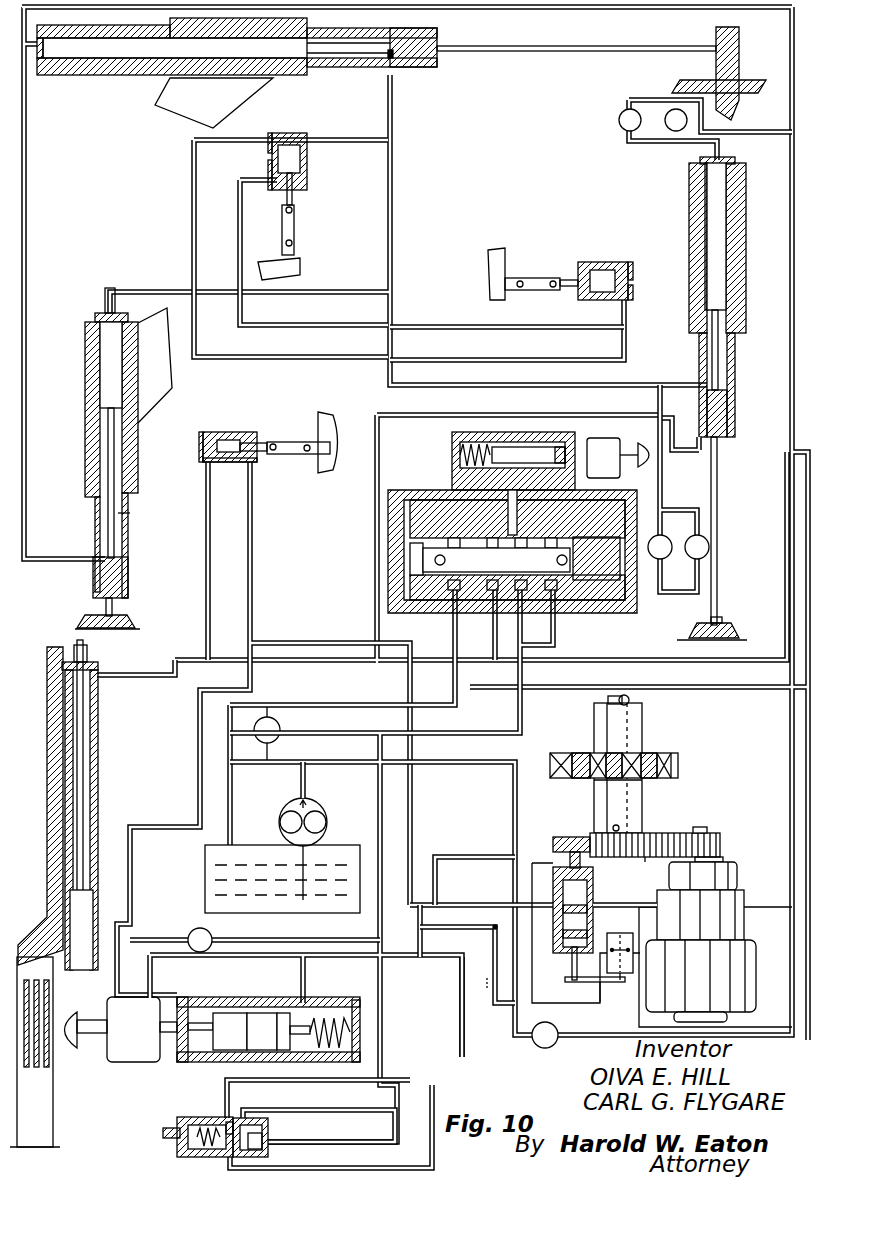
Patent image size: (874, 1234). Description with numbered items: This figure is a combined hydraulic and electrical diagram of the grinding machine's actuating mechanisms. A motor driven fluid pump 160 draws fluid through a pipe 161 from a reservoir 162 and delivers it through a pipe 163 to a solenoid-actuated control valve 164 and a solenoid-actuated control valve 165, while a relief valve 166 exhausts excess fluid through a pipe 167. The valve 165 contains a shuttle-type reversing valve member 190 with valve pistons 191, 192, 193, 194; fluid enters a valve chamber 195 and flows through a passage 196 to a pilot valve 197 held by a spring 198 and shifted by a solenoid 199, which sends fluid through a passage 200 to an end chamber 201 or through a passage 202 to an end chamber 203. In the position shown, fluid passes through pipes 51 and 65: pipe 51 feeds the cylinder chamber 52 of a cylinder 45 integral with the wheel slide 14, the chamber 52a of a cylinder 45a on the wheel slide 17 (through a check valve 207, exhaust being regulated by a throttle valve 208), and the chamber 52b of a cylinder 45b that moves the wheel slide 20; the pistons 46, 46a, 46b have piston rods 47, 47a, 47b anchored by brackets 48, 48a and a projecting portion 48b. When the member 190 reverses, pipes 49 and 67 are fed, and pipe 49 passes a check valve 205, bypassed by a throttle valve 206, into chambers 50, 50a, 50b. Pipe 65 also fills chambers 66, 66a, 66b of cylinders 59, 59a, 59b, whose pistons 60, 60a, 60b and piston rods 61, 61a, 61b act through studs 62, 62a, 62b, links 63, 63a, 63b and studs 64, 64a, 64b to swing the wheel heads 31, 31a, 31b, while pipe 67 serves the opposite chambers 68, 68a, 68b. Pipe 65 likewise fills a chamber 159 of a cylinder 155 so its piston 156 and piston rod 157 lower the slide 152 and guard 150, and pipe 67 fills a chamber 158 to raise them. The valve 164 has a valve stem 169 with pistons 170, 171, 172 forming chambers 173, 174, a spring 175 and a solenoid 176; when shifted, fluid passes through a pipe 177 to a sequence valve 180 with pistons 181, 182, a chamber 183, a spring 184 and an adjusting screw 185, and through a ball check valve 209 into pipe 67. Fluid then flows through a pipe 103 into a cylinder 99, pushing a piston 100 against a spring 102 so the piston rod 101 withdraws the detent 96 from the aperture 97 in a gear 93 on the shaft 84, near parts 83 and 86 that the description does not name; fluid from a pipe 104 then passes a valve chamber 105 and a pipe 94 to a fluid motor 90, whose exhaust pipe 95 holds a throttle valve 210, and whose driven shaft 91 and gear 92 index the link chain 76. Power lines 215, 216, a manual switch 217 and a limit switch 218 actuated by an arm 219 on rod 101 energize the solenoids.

The wheel slide 14 is at (85, 430).
The wheel slide 17 is at (746, 210).
The wheel slide 20 is at (270, 80).
The wheel head 31 is at (330, 414).
The wheel head 31a is at (488, 268).
The wheel head 31b is at (302, 270).
The cylinder 45 is at (125, 512).
The cylinder 45a is at (720, 366).
The cylinder 45b is at (145, 55).
The piston 46 is at (105, 360).
The piston 46a is at (727, 342).
The piston 46b is at (358, 60).
The piston rod 47 is at (108, 510).
The piston rod 47a is at (718, 505).
The piston rod 47b is at (532, 53).
The bracket 48 is at (82, 620).
The bracket 48a is at (735, 625).
The upwardly projecting portion 48b is at (716, 55).
The pipe 49 is at (138, 292).
The cylinder chamber 50 is at (108, 305).
The cylinder chamber 50a is at (730, 392).
The cylinder chamber 50b is at (395, 55).
The pipe 51 is at (658, 682).
The cylinder chamber 52 is at (100, 540).
The cylinder chamber 52a is at (722, 185).
The cylinder chamber 52b is at (95, 56).
The cylinder 59 is at (220, 430).
The cylinder 59a is at (626, 265).
The cylinder 59b is at (300, 152).
The piston 60 is at (232, 440).
The valve piston 60a is at (602, 272).
The valve piston 60b is at (300, 165).
The piston rod 61 is at (260, 440).
The piston rod 61a is at (573, 275).
The piston rod 61b is at (295, 190).
The stud 62 is at (274, 444).
The pivot pin 62a is at (553, 280).
The pivot pin 62b is at (295, 210).
The link 63 is at (282, 455).
The link 63a is at (542, 292).
The link 63b is at (282, 228).
The stud 64 is at (307, 445).
The pivot pin 64a is at (519, 278).
The pivot pin 64b is at (295, 243).
The pipe 65 is at (245, 148).
The cylinder chamber 66 is at (200, 447).
The cylinder chamber 66a is at (634, 290).
The cylinder chamber 66b is at (280, 135).
The pipe 67 is at (240, 215).
The cylinder chamber 68 is at (250, 465).
The valve port 68a is at (634, 300).
The valve port 68b is at (268, 150).
The link chain 76 is at (662, 755).
The shaft 83 is at (640, 785).
The shaft 84 is at (630, 702).
The shaft housing 86 is at (636, 808).
The fluid motor 90 is at (740, 902).
The driven shaft 91 is at (723, 860).
The gear 92 is at (721, 840).
The gear 93 is at (646, 862).
The pipe 94 is at (622, 905).
The pipe 95 is at (788, 942).
The detent 96 is at (574, 850).
The aperture 97 is at (560, 838).
The fluid pressure cylinder 99 is at (570, 960).
The piston 100 is at (563, 912).
The piston rod 101 is at (587, 988).
The compression spring 102 is at (562, 935).
The pipe 103 is at (477, 858).
The pipe 104 is at (475, 881).
The valve chamber 105 is at (553, 890).
The guard 150 is at (53, 1088).
The vertically movable slide 152 is at (47, 900).
The fluid pressure cylinder 155 is at (95, 812).
The piston 156 is at (85, 905).
The piston rod 157 is at (83, 755).
The cylinder chamber 158 is at (72, 980).
The cylinder chamber 159 is at (65, 668).
The fluid pump 160 is at (280, 812).
The pipe 161 is at (298, 855).
The reservoir 162 is at (356, 843).
The pipe 163 is at (300, 762).
The solenoid-actuated control valve 164 is at (177, 995).
The solenoid-actuated control valve 165 is at (386, 589).
The fluid pressure relief valve 166 is at (282, 702).
The pipe 167 is at (222, 838).
The valve stem 169 is at (198, 1020).
The valve piston 170 is at (225, 1012).
The valve piston 171 is at (277, 1052).
The valve piston 172 is at (305, 1055).
The valve chamber 173 is at (256, 1012).
The valve chamber 174 is at (280, 1012).
The compression spring 175 is at (346, 1035).
The solenoid 176 is at (134, 1055).
The pipe 177 is at (340, 940).
The sequence valve 180 is at (173, 1155).
The piston 181 is at (228, 1117).
The piston 182 is at (265, 1142).
The valve chamber 183 is at (250, 1113).
The compression spring 184 is at (226, 1128).
The adjusting screw 185 is at (163, 1133).
The shuttle-type reversing valve member 190 is at (415, 548).
The valve piston 191 is at (345, 642).
The valve piston 192 is at (485, 620).
The valve piston 193 is at (550, 611).
The valve piston 194 is at (596, 591).
The valve chamber 195 is at (522, 611).
The passage 196 is at (510, 500).
The pilot valve 197 is at (553, 447).
The compression spring 198 is at (458, 455).
The solenoid 199 is at (603, 438).
The passage 200 is at (645, 468).
The end chamber 201 is at (630, 580).
The passage 202 is at (420, 510).
The end chamber 203 is at (415, 560).
The check valve 205 is at (662, 535).
The throttle valve 206 is at (710, 547).
The check valve 207 is at (624, 130).
The throttle valve 208 is at (670, 130).
The ball check valve 209 is at (190, 930).
The throttle valve 210 is at (550, 1048).
The power line 215 is at (458, 1030).
The power line 216 is at (490, 1038).
The manually operable switch 217 is at (484, 990).
The limit switch 218 is at (622, 943).
The arm 219 is at (605, 990).